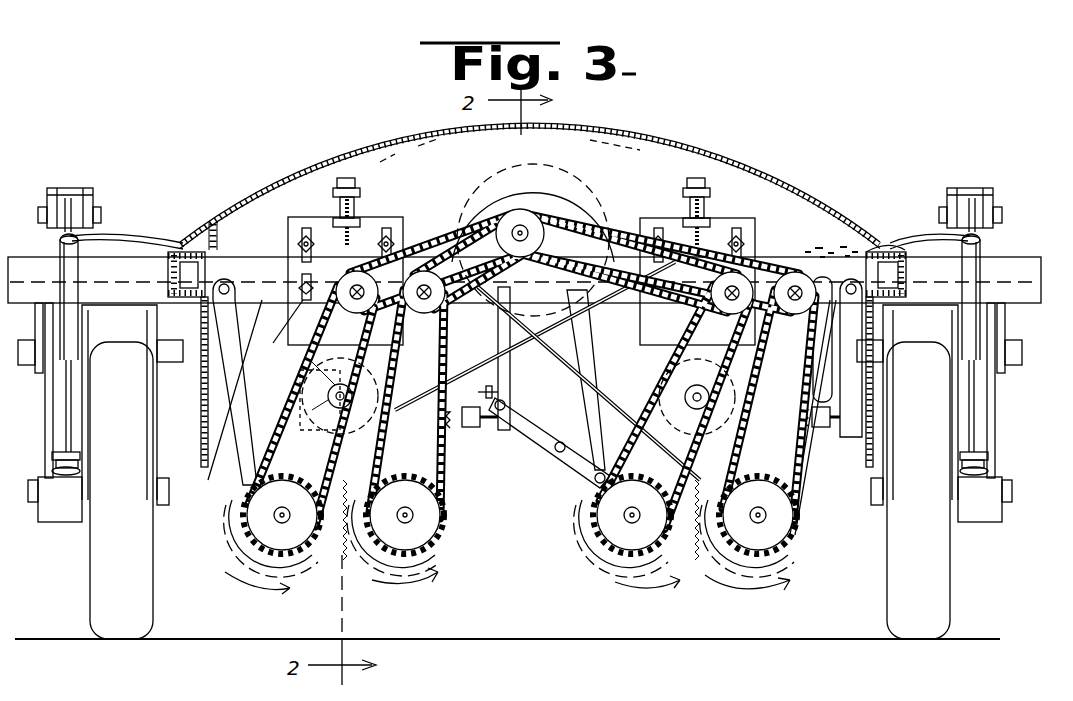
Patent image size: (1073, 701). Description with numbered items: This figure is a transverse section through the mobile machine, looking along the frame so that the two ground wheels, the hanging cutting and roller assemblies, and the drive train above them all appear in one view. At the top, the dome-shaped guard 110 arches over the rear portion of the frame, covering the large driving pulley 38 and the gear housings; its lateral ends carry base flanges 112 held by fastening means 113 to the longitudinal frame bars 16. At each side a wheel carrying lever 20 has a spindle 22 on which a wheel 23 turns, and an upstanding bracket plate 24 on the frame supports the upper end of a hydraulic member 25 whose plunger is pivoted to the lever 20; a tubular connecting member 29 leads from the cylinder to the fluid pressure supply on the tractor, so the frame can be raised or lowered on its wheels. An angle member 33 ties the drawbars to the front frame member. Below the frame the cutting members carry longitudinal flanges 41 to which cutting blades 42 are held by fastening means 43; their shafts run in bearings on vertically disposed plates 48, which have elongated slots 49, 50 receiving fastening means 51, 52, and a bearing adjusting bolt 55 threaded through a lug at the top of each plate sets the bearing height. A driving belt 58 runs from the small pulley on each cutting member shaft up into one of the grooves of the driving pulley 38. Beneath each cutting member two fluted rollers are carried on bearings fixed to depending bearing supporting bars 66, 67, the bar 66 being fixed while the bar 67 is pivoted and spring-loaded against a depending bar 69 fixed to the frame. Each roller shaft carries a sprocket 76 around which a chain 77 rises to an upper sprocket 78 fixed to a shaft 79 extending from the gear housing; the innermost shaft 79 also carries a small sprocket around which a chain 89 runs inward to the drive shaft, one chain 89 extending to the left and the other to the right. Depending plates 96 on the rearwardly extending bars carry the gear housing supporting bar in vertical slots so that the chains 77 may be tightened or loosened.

The longitudinal frame bar 16 is at (907, 290).
The wheel carrying lever 20 is at (62, 525).
The spindle 22 is at (33, 503).
The wheel 23 is at (147, 603).
The upstanding bracket plate 24 is at (95, 192).
The hydraulic member 25 is at (73, 287).
The tubular connecting member 29 is at (134, 235).
The angle member 33 is at (712, 212).
The driving pulley 38 is at (460, 225).
The longitudinal flange 41 is at (811, 407).
The cutting blade 42 is at (756, 393).
The fastening means 43 is at (446, 362).
The vertically disposed plate 48 is at (370, 222).
The vertical elongated slot 49 is at (388, 226).
The vertical elongated slot 50 is at (300, 282).
The fastening means 51 is at (298, 240).
The fastening means 52 is at (274, 327).
The bearing adjusting bolt 55 is at (688, 180).
The driving belt 58 is at (585, 380).
The bearing supporting bar 66 is at (212, 480).
The bearing supporting bar 67 is at (457, 438).
The depending bar 69 is at (506, 365).
The sprocket 76 is at (298, 550).
The chain 77 is at (282, 552).
The upper sprocket 78 is at (357, 285).
The shaft 79 is at (243, 382).
The chain 89 is at (646, 218).
The depending plate 96 is at (200, 415).
The dome-shaped guard 110 is at (722, 170).
The base flange 112 is at (878, 262).
The fastening means 113 is at (882, 262).